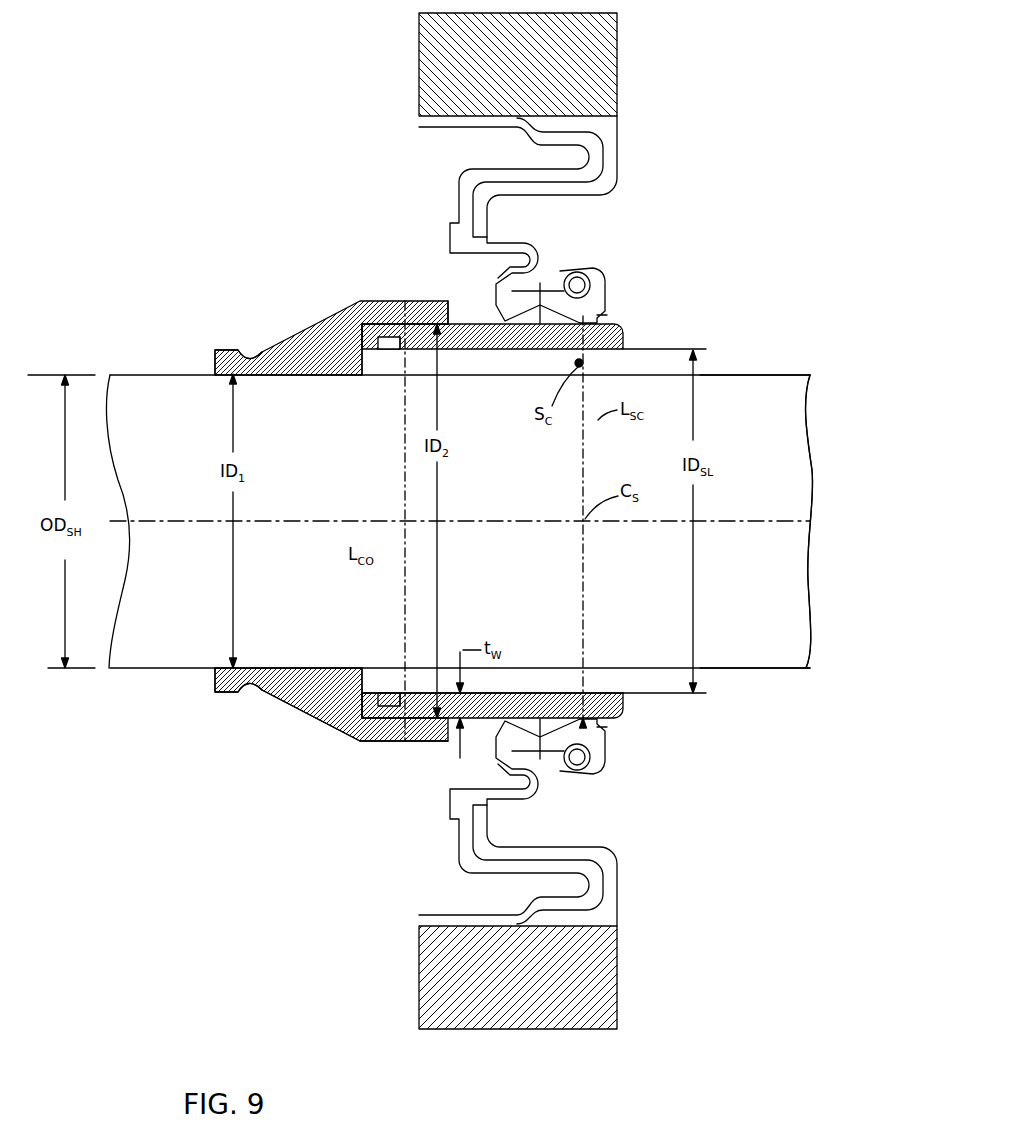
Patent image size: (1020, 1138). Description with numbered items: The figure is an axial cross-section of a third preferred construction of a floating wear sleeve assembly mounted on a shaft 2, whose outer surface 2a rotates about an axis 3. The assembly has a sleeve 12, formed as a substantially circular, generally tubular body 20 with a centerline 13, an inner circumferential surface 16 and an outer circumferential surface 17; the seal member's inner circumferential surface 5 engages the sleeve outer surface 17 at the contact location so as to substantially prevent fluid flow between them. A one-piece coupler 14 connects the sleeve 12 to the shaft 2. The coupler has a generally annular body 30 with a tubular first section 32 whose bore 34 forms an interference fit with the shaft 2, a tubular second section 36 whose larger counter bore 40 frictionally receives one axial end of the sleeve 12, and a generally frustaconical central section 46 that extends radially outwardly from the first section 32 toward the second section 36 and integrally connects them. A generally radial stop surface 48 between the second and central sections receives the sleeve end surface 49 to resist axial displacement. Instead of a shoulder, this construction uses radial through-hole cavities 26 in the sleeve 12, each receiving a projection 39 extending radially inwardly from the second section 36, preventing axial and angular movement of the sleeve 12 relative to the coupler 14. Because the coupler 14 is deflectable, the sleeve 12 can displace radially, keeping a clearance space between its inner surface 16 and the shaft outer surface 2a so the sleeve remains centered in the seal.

The shaft 2 is at (823, 698).
The outer surface 2a is at (768, 374).
The axis 3 is at (812, 522).
The centerline 13 is at (809, 521).
The inner circumferential surface 5 is at (590, 690).
The sleeve 12 is at (648, 313).
The coupler 14 is at (283, 757).
The inner circumferential surface 16 is at (524, 688).
The outer circumferential surface 17 is at (549, 280).
The tubular body 20 is at (552, 733).
The cavity 26 is at (378, 349).
The annular body 30 is at (304, 314).
The first section 32 is at (239, 342).
The bore 34 is at (250, 668).
The second section 36 is at (403, 752).
The projection 39 is at (398, 349).
The bore 40 is at (455, 320).
The central section 46 is at (322, 732).
The stop surface 48 is at (363, 692).
The end surface 49 is at (357, 343).